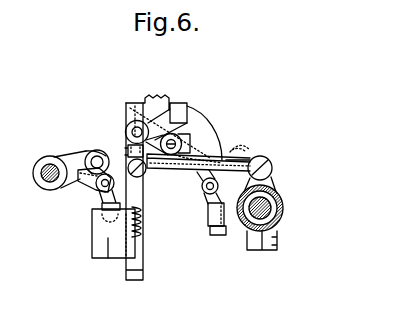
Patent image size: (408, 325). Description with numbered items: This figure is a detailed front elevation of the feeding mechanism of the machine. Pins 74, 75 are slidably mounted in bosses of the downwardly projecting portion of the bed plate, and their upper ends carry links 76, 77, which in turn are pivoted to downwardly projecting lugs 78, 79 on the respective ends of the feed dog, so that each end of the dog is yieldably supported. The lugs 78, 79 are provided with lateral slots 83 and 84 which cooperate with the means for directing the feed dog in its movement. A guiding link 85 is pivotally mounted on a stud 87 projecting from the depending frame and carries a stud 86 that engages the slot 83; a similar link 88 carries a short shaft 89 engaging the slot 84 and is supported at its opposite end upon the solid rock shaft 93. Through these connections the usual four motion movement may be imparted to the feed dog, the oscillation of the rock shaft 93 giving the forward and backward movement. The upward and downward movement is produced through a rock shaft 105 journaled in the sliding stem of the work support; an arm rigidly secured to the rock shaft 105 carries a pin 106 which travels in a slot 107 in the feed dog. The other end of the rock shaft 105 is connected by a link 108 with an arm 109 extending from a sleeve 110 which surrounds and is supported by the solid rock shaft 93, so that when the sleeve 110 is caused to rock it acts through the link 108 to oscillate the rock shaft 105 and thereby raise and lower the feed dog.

The sliding pin 74 is at (107, 212).
The sliding pin 75 is at (213, 233).
The link 76 is at (101, 202).
The link 77 is at (208, 214).
The downwardly projecting lug 78 is at (91, 184).
The downwardly projecting lug 79 is at (205, 196).
The lateral slot 83 is at (80, 153).
The lateral slot 84 is at (246, 152).
The guiding link 85 is at (64, 157).
The stud 86 is at (98, 150).
The stud 87 is at (38, 185).
The link 88 is at (269, 158).
The short shaft 89 is at (241, 150).
The solid rock shaft 93 is at (281, 218).
The rock shaft 105 is at (132, 128).
The pin 106 is at (186, 120).
The slot 107 is at (201, 148).
The link 108 is at (184, 169).
The arm 109 is at (274, 181).
The sleeve 110 is at (283, 205).